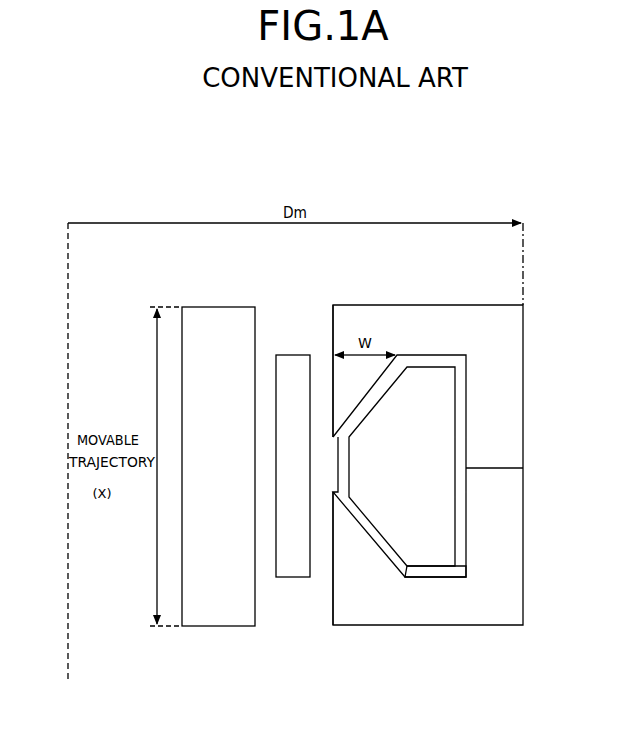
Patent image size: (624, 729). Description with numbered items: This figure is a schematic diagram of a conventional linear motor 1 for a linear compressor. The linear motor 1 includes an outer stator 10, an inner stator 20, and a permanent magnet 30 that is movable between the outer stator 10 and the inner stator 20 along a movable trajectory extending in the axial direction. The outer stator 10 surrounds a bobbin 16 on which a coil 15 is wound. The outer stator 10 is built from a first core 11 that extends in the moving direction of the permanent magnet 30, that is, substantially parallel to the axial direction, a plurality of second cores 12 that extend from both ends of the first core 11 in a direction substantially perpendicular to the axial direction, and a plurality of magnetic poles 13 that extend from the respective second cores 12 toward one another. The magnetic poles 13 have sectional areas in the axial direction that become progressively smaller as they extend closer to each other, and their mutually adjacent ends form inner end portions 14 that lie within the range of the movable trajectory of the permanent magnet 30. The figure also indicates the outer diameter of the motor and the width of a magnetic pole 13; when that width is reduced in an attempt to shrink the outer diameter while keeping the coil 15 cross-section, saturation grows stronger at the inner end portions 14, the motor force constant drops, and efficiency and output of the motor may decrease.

The linear motor 1 is at (78, 188).
The outer stator 10 is at (469, 469).
The first core 11 is at (519, 428).
The second core 12 is at (428, 305).
The magnetic pole 13 is at (343, 381).
The inner end portion 14 is at (343, 420).
The coil 15 is at (443, 500).
The bobbin 16 is at (433, 568).
The inner stator 20 is at (222, 626).
The permanent magnet 30 is at (297, 577).